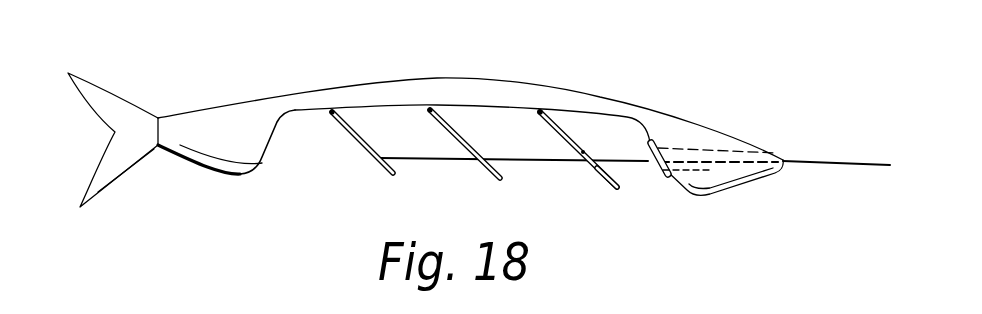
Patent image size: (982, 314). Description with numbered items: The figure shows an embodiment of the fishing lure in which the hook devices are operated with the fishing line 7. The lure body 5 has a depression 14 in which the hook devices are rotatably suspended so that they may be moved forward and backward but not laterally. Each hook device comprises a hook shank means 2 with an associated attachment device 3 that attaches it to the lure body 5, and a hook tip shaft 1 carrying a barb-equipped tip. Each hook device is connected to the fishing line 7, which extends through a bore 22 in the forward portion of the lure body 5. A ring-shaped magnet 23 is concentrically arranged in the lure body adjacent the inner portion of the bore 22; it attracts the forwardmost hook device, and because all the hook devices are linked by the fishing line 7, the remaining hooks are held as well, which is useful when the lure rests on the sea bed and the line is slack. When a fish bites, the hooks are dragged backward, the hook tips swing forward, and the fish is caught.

The lure body 5 is at (223, 122).
The depression 14 is at (304, 152).
The fishing line 7 is at (431, 159).
The hook tip shaft 1 is at (597, 172).
The hook shank means 2 is at (563, 127).
The attachment device 3 is at (542, 110).
The ring-shaped magnet 23 is at (658, 168).
The bore 22 is at (745, 168).